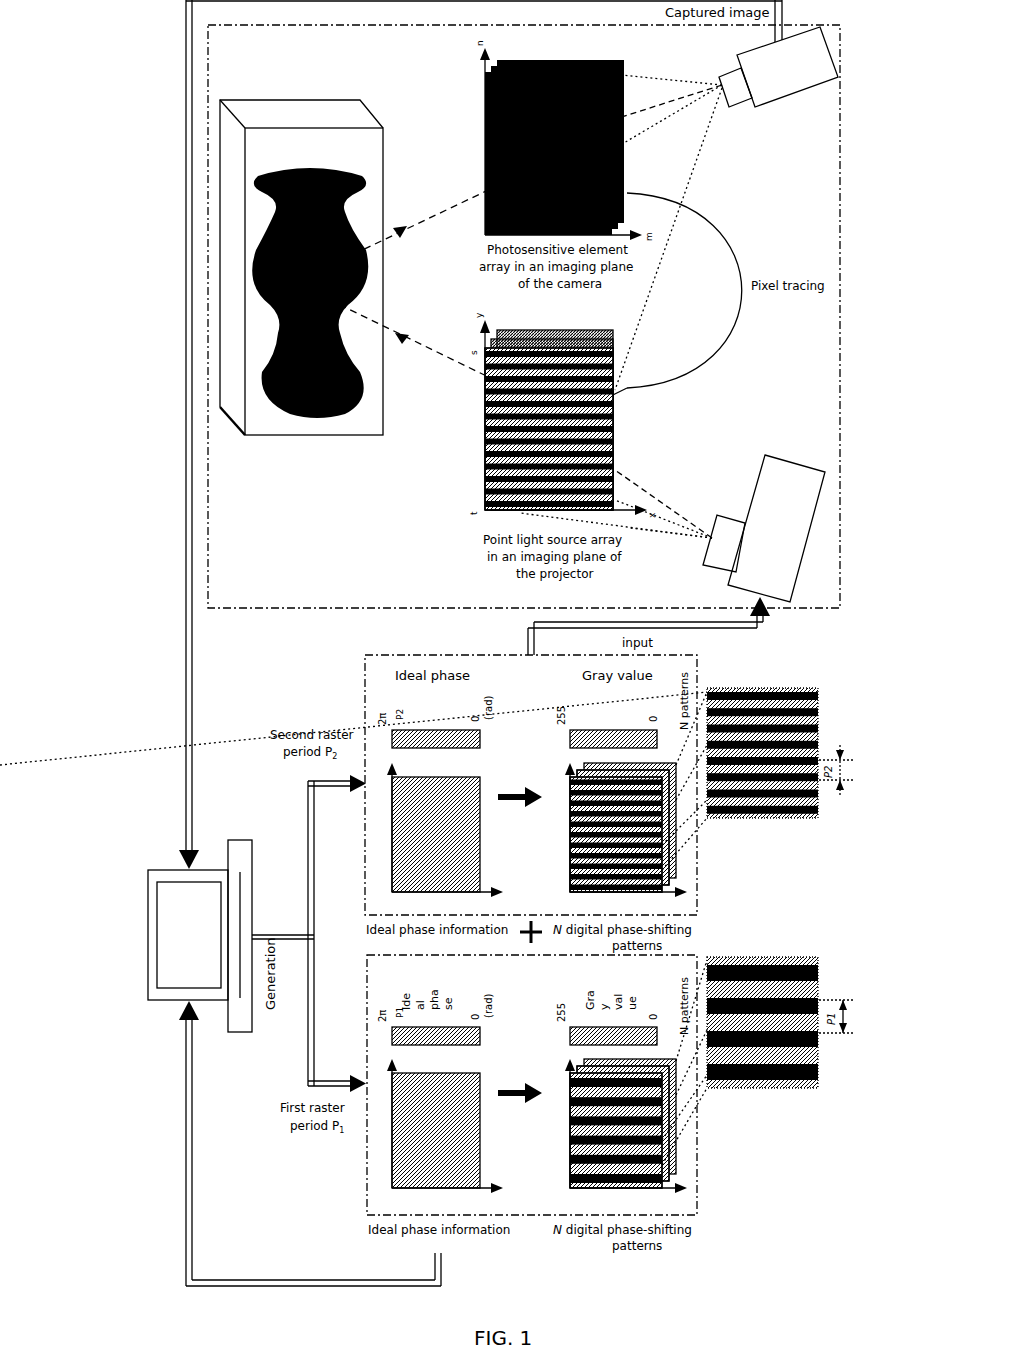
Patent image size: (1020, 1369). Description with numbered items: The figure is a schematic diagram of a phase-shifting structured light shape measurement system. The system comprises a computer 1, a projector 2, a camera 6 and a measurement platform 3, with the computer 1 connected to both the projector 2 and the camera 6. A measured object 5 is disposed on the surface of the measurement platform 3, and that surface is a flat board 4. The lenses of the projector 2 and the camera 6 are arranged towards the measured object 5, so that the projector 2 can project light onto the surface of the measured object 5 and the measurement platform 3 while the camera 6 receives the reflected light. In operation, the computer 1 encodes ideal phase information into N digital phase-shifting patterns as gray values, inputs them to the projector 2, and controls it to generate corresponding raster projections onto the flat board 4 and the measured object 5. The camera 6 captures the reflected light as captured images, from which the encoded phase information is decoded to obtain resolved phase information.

The computer 1 is at (172, 931).
The projector 2 is at (752, 477).
The measurement platform 3 is at (234, 412).
The flat board 4 is at (365, 406).
The measured object 5 is at (300, 370).
The camera 6 is at (778, 67).